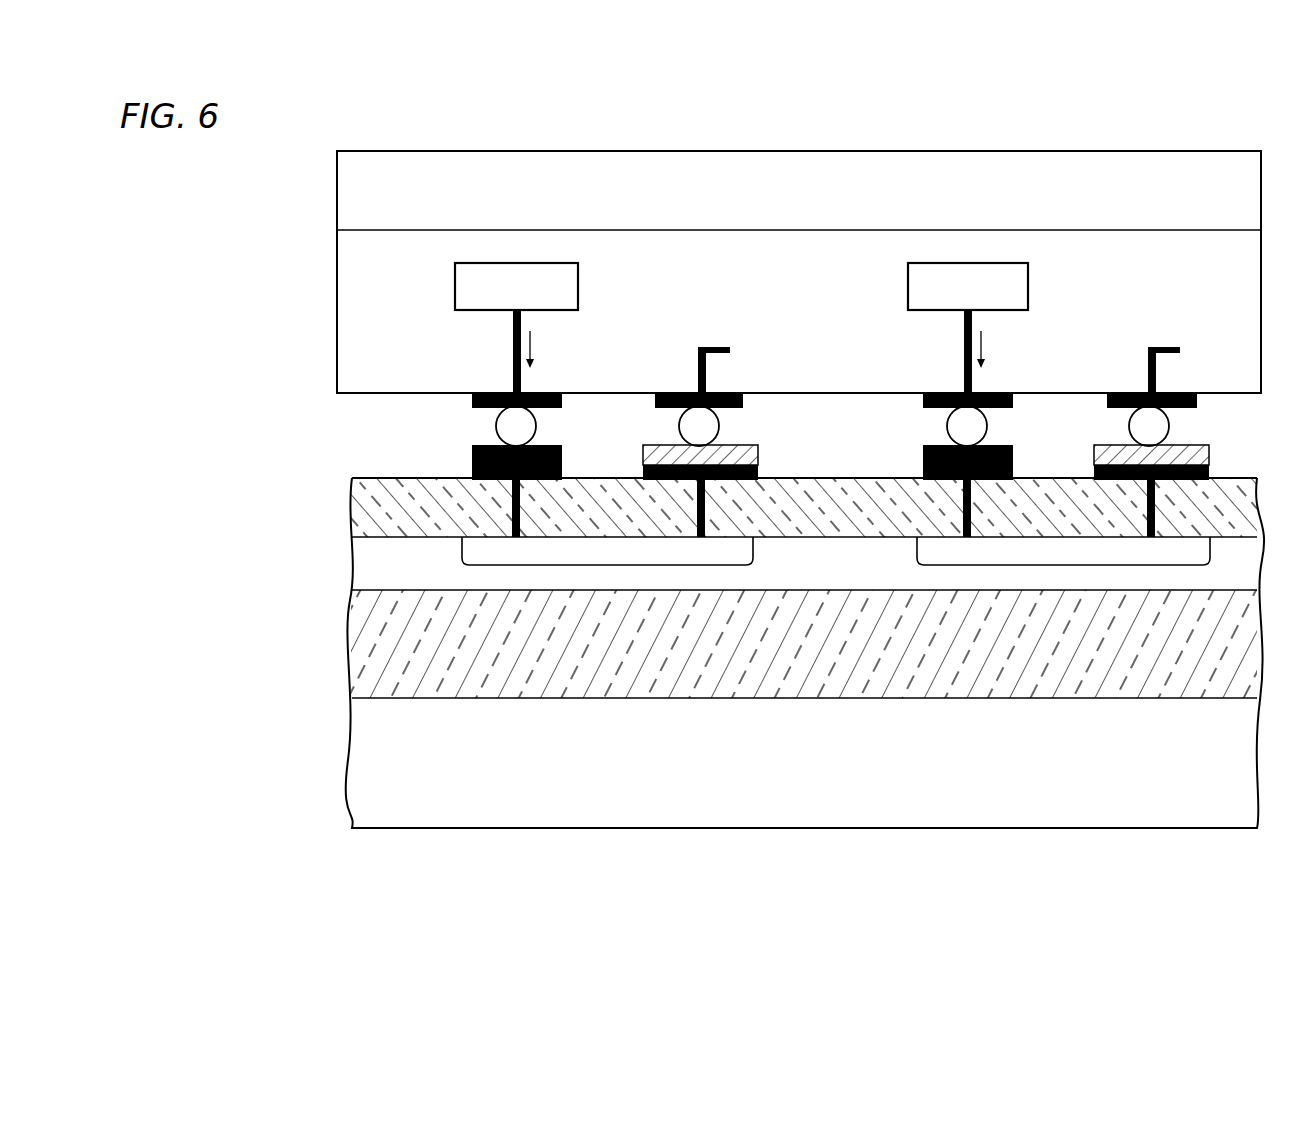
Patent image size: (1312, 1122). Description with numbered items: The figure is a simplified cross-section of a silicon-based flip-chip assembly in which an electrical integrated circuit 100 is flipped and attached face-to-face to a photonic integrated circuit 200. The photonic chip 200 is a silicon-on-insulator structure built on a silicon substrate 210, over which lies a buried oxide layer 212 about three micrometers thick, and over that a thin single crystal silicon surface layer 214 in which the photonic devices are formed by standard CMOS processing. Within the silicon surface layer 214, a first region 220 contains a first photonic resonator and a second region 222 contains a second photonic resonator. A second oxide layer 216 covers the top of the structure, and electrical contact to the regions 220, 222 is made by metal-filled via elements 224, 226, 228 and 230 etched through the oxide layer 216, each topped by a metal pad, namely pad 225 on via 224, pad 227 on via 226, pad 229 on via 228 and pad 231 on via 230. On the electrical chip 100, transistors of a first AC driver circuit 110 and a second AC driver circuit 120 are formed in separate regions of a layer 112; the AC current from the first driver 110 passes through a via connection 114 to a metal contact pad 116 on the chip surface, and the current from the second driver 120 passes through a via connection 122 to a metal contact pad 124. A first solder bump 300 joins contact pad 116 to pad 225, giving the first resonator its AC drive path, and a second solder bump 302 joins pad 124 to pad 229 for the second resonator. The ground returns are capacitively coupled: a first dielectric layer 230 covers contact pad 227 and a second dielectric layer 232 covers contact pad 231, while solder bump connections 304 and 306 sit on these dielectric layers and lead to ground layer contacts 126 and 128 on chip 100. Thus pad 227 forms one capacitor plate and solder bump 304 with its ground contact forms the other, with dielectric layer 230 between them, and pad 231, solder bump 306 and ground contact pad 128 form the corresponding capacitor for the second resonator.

The electrical integrated circuit 100 is at (226, 197).
The layer 112 is at (337, 310).
The first AC driver circuit 110 is at (455, 285).
The via connection 114 is at (513, 334).
The metal contact pad 116 is at (475, 393).
The second AC driver circuit 120 is at (908, 285).
The via connection 122 is at (964, 334).
The metal contact pad 124 is at (925, 393).
The ground layer contact 126 is at (672, 393).
The ground contact pad 128 is at (1123, 393).
The photonic integrated circuit 200 is at (226, 519).
The silicon substrate 210 is at (350, 753).
The oxide layer 212 is at (350, 621).
The silicon surface layer 214 is at (350, 551).
The oxide layer 216 is at (350, 504).
The first region 220 is at (746, 552).
The second region 222 is at (1186, 552).
The via element 224 is at (520, 508).
The pad 225 is at (472, 465).
The via element 226 is at (705, 508).
The pad 227 is at (643, 470).
The via element 228 is at (971, 508).
The pad 229 is at (923, 465).
The dielectric layer 230 is at (758, 456).
The pad 231 is at (1094, 470).
The dielectric layer 232 is at (1209, 456).
The first solder bump 300 is at (536, 427).
The second solder bump 302 is at (986, 427).
The solder bump connection 304 is at (718, 427).
The solder bump connection 306 is at (1169, 427).